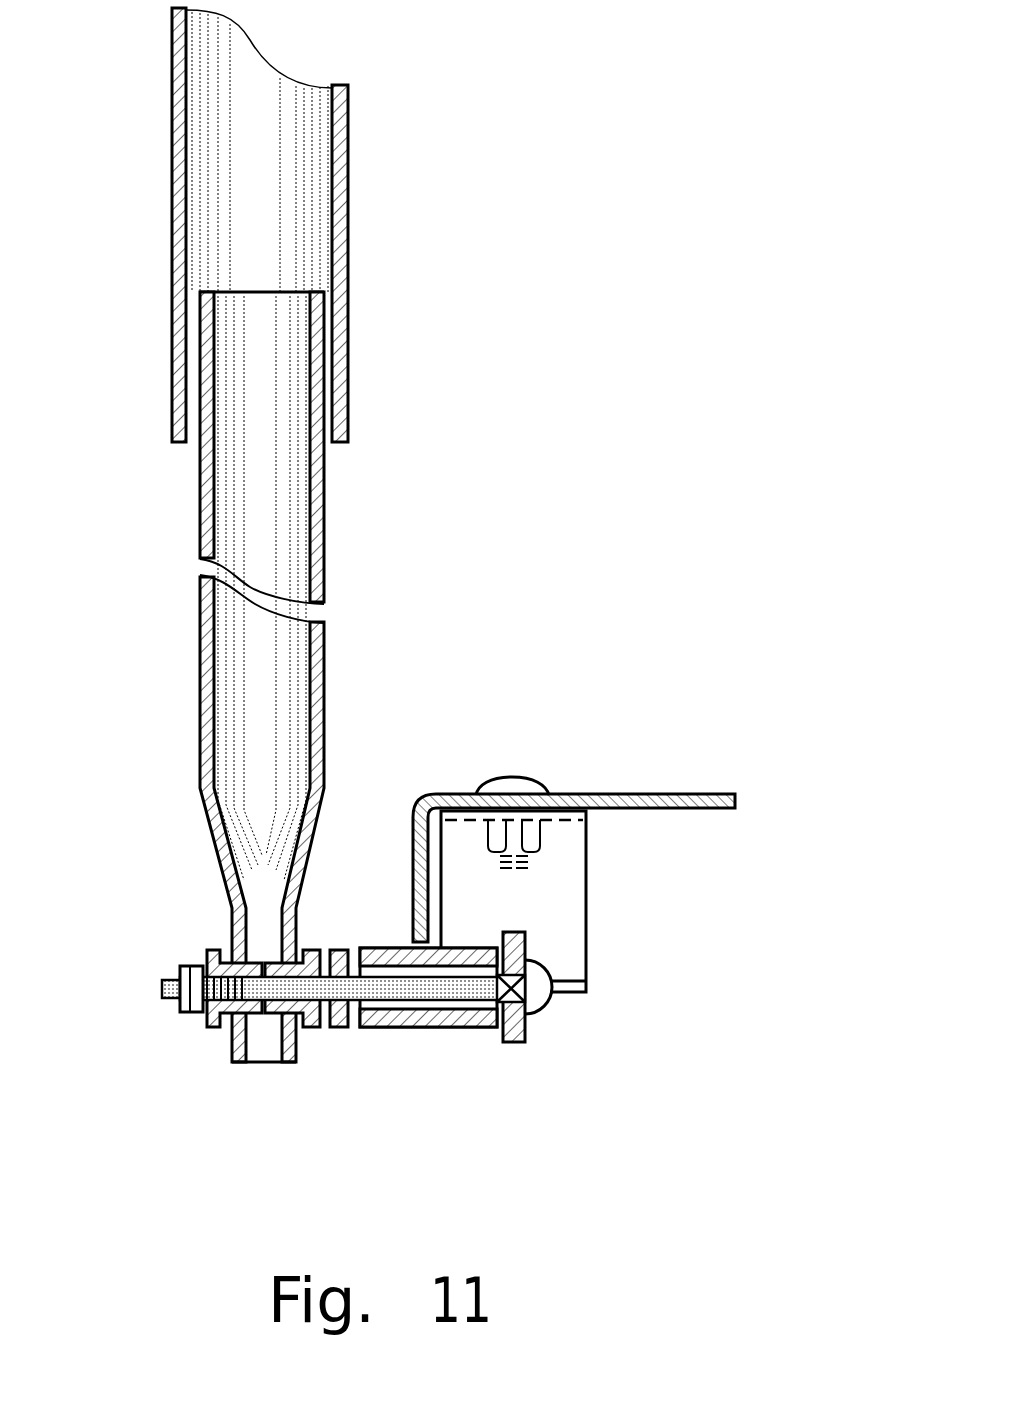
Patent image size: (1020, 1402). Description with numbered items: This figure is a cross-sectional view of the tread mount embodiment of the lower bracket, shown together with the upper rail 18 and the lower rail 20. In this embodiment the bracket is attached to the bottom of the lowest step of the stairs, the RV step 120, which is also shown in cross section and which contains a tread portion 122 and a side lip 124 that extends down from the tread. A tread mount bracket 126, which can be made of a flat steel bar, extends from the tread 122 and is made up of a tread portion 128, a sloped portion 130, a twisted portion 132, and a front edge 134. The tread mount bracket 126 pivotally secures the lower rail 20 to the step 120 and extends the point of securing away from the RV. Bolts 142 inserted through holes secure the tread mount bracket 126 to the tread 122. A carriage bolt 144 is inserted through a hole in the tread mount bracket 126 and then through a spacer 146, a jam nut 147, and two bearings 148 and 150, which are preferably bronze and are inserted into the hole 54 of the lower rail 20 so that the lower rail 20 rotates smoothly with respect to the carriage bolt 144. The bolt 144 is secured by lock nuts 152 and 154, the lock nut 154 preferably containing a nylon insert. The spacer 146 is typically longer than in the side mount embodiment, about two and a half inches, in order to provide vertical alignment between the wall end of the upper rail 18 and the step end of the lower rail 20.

The upper rail 18 is at (348, 208).
The lower rail 20 is at (200, 708).
The hole 54 is at (246, 950).
The RV step 120 is at (625, 828).
The tread portion 122 is at (735, 803).
The side lip 124 is at (413, 872).
The tread mount bracket 126 is at (588, 922).
The tread portion 128 is at (610, 810).
The sloped portion 130 is at (540, 908).
The twisted portion 132 is at (586, 984).
The front edge 134 is at (525, 1020).
The bolts 142 is at (514, 775).
The carriage bolt 144 is at (460, 1030).
The spacer 146 is at (385, 1028).
The jam nut 147 is at (345, 1027).
The bearing 148 is at (330, 1020).
The bearing 150 is at (208, 1025).
The lock nut 152 is at (528, 1003).
The lock nut 154 is at (198, 962).